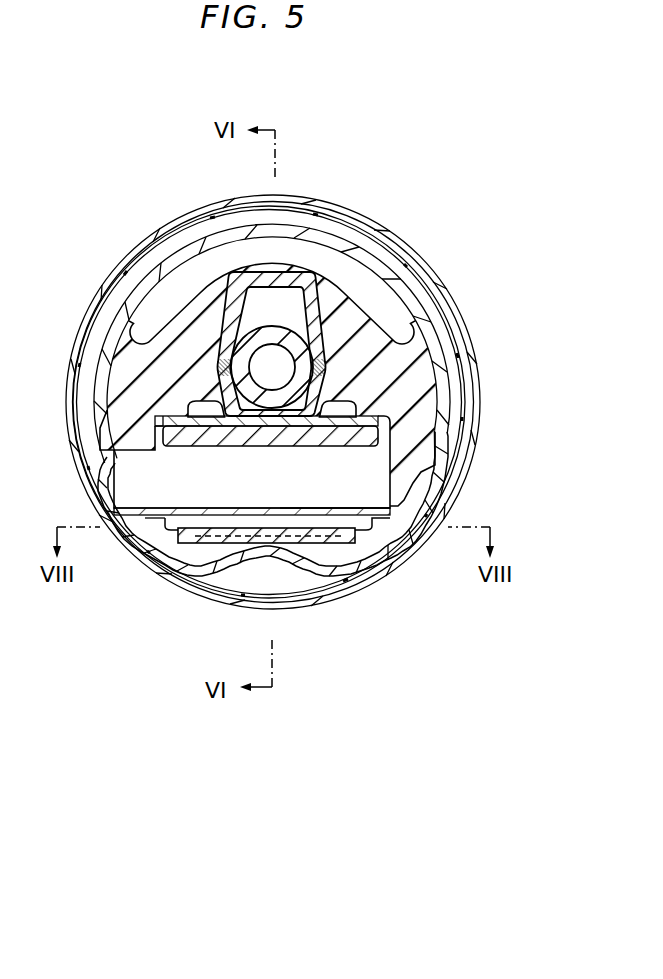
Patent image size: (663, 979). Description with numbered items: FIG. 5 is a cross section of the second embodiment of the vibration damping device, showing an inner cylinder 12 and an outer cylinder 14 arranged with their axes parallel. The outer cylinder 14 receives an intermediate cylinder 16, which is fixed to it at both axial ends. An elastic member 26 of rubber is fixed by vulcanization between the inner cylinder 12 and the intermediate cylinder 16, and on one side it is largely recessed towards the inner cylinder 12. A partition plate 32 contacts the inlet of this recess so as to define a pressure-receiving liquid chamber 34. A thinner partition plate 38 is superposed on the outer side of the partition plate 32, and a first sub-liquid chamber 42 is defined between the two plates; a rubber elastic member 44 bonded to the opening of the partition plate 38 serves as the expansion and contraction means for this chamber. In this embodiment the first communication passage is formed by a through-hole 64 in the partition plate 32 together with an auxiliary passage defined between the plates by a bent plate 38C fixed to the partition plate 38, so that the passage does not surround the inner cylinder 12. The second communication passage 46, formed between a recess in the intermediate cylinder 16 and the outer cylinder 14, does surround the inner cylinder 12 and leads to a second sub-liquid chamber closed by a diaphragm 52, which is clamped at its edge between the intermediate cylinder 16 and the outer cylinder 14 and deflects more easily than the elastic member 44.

The inner cylinder 12 is at (268, 332).
The outer cylinder 14 is at (380, 224).
The intermediate cylinder 16 is at (442, 408).
The elastic member 26 is at (408, 358).
The partition plate 32 is at (344, 510).
The pressure-receiving liquid chamber 34 is at (270, 480).
The partition plate 38 is at (383, 525).
The bent plate 38C is at (282, 508).
The first sub-liquid chamber 42 is at (238, 527).
The elastic member 44 is at (210, 541).
The second communication passage 46 is at (413, 282).
The diaphragm 52 is at (307, 567).
The through-hole 64 is at (192, 509).